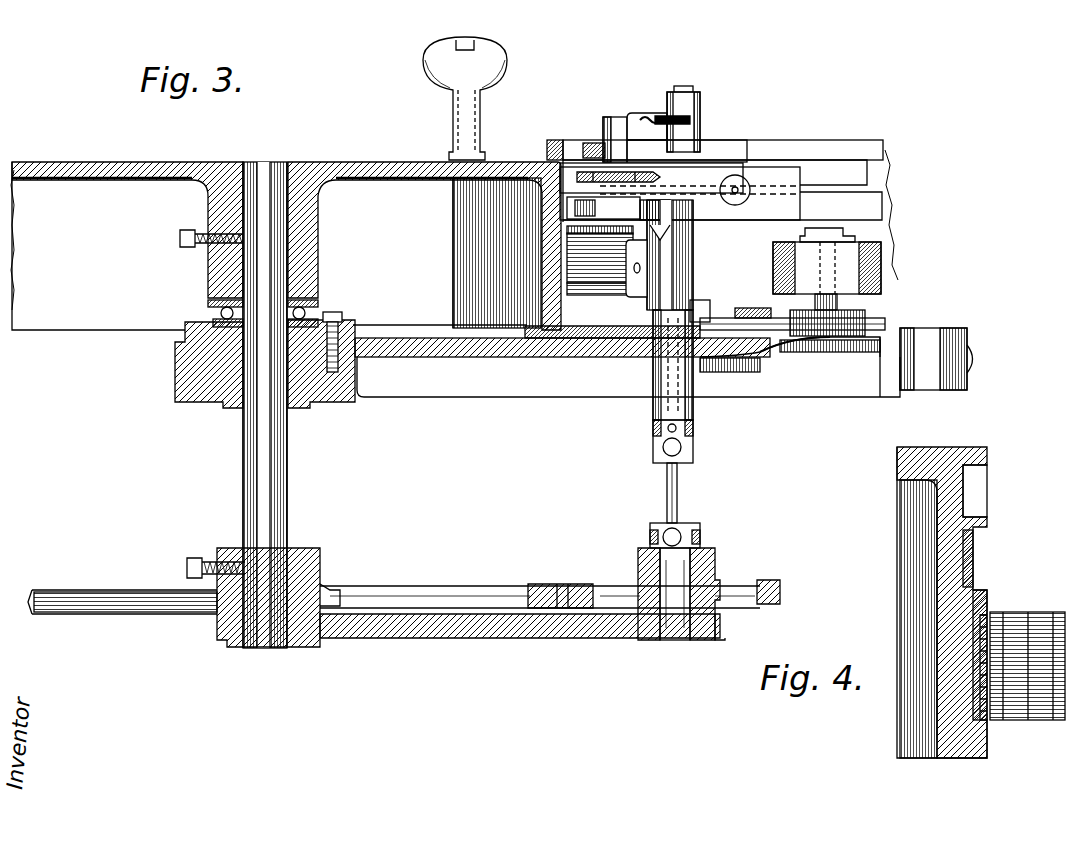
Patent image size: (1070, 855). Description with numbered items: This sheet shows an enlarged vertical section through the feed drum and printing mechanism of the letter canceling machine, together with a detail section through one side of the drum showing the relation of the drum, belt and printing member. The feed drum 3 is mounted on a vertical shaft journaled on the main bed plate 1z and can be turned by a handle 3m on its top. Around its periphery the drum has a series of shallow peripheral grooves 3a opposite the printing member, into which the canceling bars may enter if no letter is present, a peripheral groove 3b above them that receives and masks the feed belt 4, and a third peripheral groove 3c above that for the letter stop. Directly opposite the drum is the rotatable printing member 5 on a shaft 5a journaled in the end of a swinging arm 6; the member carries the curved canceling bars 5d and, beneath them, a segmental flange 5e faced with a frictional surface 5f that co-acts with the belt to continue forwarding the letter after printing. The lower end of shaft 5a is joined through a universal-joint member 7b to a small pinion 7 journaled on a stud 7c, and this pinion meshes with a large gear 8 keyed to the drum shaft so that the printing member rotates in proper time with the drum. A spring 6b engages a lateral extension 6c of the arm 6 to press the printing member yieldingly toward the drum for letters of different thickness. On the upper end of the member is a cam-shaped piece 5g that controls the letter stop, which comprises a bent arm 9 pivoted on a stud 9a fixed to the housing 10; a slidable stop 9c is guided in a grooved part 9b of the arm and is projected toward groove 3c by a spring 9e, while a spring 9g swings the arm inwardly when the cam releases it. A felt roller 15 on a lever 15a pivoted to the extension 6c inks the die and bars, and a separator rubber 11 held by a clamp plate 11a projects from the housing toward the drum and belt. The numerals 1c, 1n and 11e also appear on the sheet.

In FIG. 3, the spindle shaft 1c is at (289, 470).
In FIG. 3, the main bed plate 1z is at (425, 356).
In FIG. 3, the lower bracket 1n is at (345, 640).
In FIG. 3, the feed drum 3 is at (336, 160).
In FIG. 4, the feed drum 3 is at (896, 462).
In FIG. 3, the shallow peripheral grooves 3a is at (545, 252).
In FIG. 4, the peripheral groove 3b is at (960, 553).
In FIG. 3, the third peripheral groove 3c is at (552, 172).
In FIG. 4, the third peripheral groove 3c is at (966, 492).
In FIG. 3, the handle 3m is at (422, 68).
In FIG. 3, the feed belt 4 is at (565, 218).
In FIG. 4, the feed belt 4 is at (974, 548).
In FIG. 3, the rotatable printing member 5 is at (656, 270).
In FIG. 3, the shaft 5a is at (668, 425).
In FIG. 4, the shaft 5a is at (965, 726).
In FIG. 3, the canceling bars 5d is at (545, 285).
In FIG. 4, the canceling bars 5d is at (1021, 712).
In FIG. 3, the segmental flange 5e is at (716, 312).
In FIG. 3, the frictional surface 5f is at (762, 318).
In FIG. 3, the cam-shaped piece 5g is at (651, 191).
In FIG. 3, the swinging arm 6 is at (655, 388).
In FIG. 3, the spring 6b is at (920, 345).
In FIG. 3, the lateral extension 6c is at (782, 358).
In FIG. 3, the pinion 7 is at (610, 582).
In FIG. 3, the universal-joint member 7b is at (680, 482).
In FIG. 3, the stud 7c is at (656, 541).
In FIG. 3, the large gear 8 is at (558, 584).
In FIG. 3, the bent arm 9 is at (640, 112).
In FIG. 3, the stud 9a is at (694, 96).
In FIG. 3, the grooved part 9b is at (602, 120).
In FIG. 3, the slidable stop 9c is at (582, 152).
In FIG. 3, the spring 9e is at (664, 183).
In FIG. 3, the spring 9g is at (665, 108).
In FIG. 3, the housing 10 is at (758, 152).
In FIG. 3, the separator rubber 11 is at (862, 182).
In FIG. 3, the clamp plate 11a is at (785, 178).
In FIG. 3, the lower plate 11e is at (870, 198).
In FIG. 3, the felt roller 15 is at (862, 243).
In FIG. 3, the lever 15a is at (866, 318).